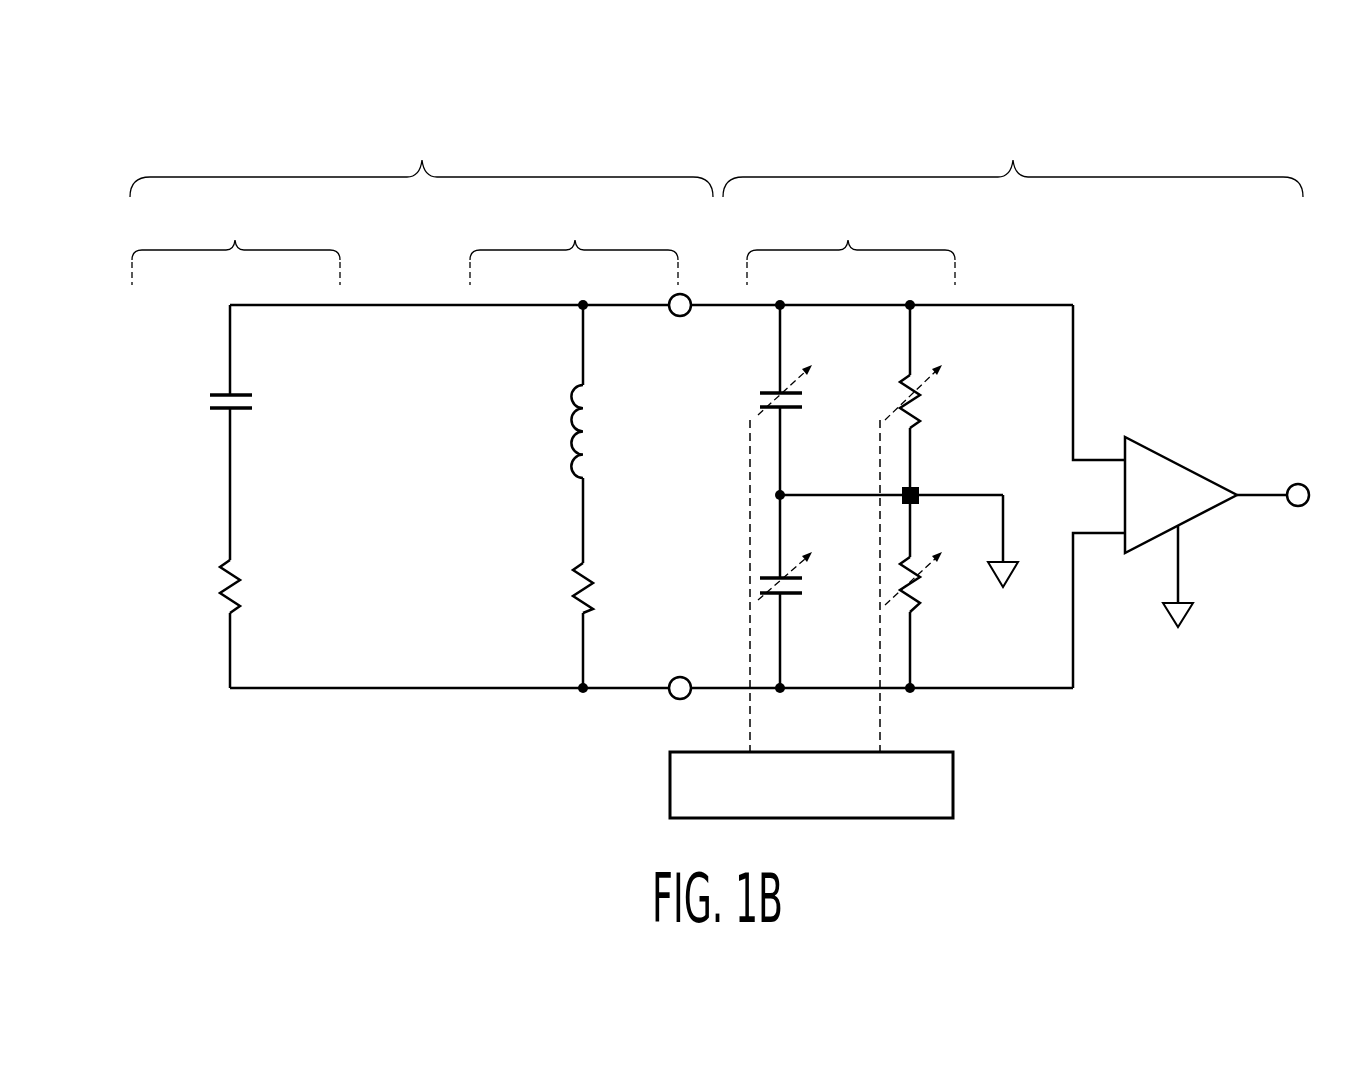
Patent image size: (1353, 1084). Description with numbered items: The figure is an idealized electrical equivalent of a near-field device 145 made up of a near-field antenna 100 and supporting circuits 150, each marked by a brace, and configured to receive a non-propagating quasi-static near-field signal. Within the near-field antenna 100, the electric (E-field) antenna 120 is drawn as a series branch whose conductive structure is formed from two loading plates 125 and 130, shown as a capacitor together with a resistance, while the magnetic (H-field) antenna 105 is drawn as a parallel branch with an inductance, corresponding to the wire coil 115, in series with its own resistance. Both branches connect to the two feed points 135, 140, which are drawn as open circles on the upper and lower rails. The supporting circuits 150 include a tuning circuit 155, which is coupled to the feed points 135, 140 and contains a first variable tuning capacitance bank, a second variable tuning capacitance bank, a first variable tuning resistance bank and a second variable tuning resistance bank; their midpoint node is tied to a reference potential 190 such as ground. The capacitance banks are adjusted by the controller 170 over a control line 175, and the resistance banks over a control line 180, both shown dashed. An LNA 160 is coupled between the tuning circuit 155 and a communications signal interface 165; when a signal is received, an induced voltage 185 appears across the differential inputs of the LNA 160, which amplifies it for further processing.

The near-field device 145 is at (167, 152).
The near-field antenna 100 is at (421, 161).
The supporting circuits 150 is at (1013, 161).
The electric (E-field) antenna 120 is at (236, 448).
The magnetic (H-field) antenna 105 is at (574, 450).
The tuning circuit 155 is at (875, 450).
The loading plate 125 is at (240, 393).
The loading plate 130 is at (240, 410).
The wire coil 115 is at (586, 432).
The feed point 135 is at (680, 316).
The feed point 140 is at (678, 677).
The control line 175 is at (750, 506).
The control line 180 is at (880, 446).
The induced voltage 185 is at (1057, 480).
The reference potential 190 is at (1013, 573).
The LNA 160 is at (1180, 455).
The communications signal interface 165 is at (1298, 483).
The controller 170 is at (953, 790).